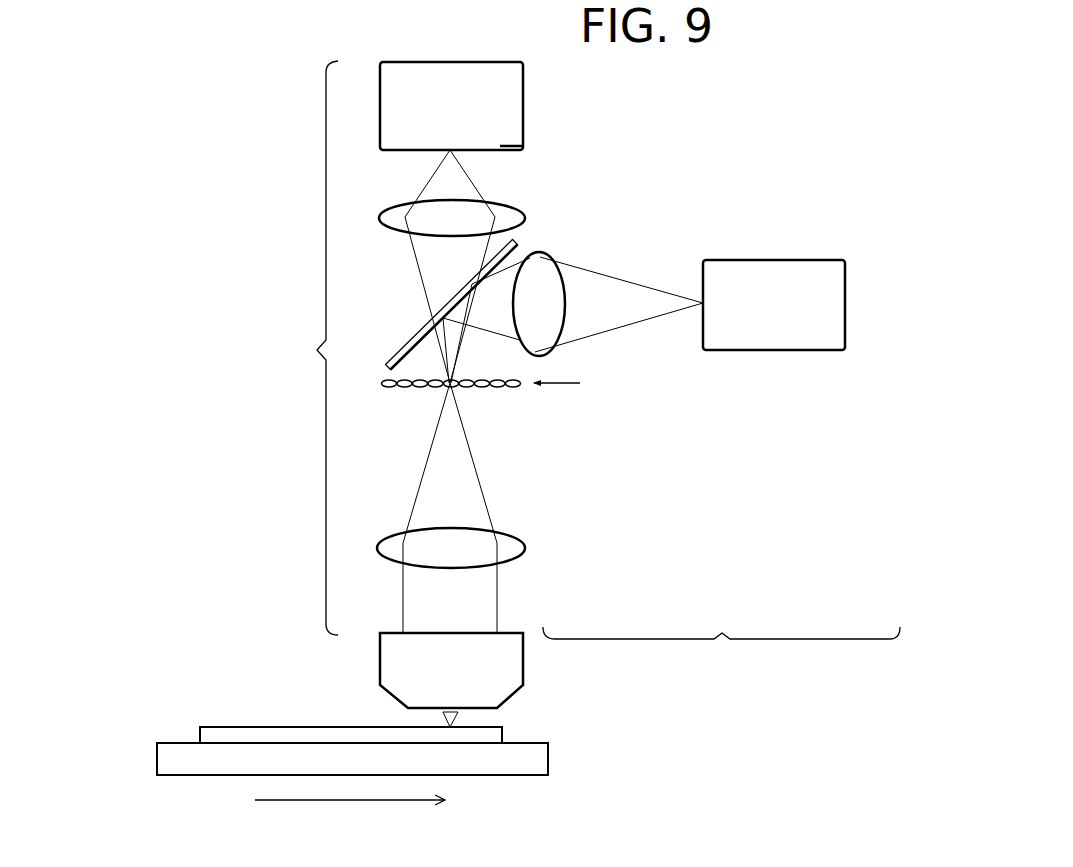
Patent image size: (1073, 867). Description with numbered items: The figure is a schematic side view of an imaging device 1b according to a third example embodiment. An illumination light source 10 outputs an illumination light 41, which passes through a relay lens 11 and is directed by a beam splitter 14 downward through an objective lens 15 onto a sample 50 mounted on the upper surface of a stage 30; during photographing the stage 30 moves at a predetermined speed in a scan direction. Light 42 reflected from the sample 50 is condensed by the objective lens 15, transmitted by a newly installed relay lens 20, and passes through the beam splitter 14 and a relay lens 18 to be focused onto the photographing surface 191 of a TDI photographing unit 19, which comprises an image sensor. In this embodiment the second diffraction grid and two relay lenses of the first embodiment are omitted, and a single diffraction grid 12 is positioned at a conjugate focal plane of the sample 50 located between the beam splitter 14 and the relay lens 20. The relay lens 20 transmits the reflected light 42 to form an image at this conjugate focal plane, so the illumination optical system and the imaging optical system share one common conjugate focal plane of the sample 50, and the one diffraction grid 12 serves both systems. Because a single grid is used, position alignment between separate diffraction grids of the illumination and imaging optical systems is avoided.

The imaging device 1b is at (972, 718).
The illumination light source 10 is at (810, 260).
The relay lens 11 is at (541, 254).
The diffraction grid 12 is at (380, 385).
The beam splitter 14 is at (518, 240).
The objective lens 15 is at (525, 675).
The relay lens 18 is at (513, 207).
The TDI photographing unit 19 is at (523, 90).
The photographing surface 191 is at (500, 141).
The relay lens 20 is at (513, 535).
The stage 30 is at (550, 757).
The illumination light 41 is at (622, 270).
The reflected light 42 is at (410, 282).
The sample 50 is at (505, 735).